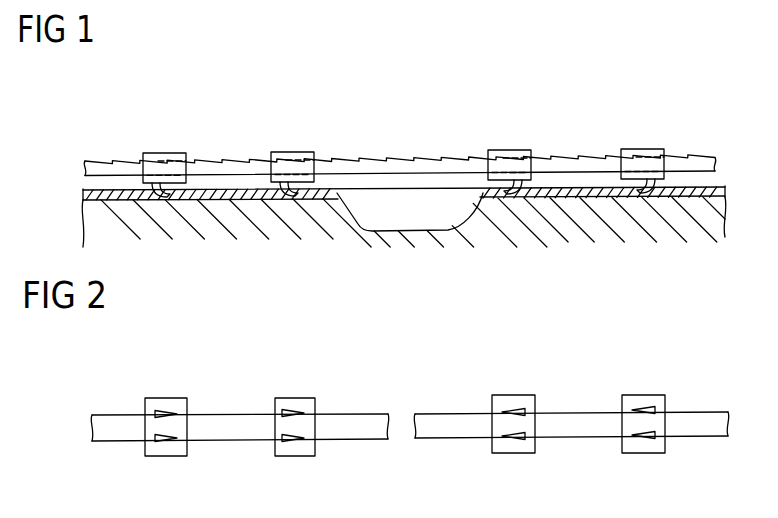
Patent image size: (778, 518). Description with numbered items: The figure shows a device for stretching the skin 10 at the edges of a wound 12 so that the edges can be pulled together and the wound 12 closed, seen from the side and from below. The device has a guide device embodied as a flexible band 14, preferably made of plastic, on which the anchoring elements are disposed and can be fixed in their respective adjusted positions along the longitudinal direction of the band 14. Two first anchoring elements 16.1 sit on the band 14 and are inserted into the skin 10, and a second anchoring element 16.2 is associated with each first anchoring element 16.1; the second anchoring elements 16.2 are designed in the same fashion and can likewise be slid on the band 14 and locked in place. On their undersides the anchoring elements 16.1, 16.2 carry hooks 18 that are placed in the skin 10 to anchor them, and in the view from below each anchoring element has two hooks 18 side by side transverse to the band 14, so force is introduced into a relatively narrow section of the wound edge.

In FIG. 1, the skin 10 is at (569, 197).
In FIG. 1, the wound 12 is at (425, 231).
In FIG. 1, the flexible band 14 is at (445, 163).
In FIG. 2, the flexible band 14 is at (232, 421).
In FIG. 1, the first anchoring element 16.1 is at (288, 152).
In FIG. 2, the first anchoring element 16.1 is at (298, 398).
In FIG. 1, the second anchoring element 16.2 is at (161, 153).
In FIG. 2, the second anchoring element 16.2 is at (165, 398).
In FIG. 1, the hook 18 is at (648, 196).
In FIG. 2, the hook 18 is at (525, 436).